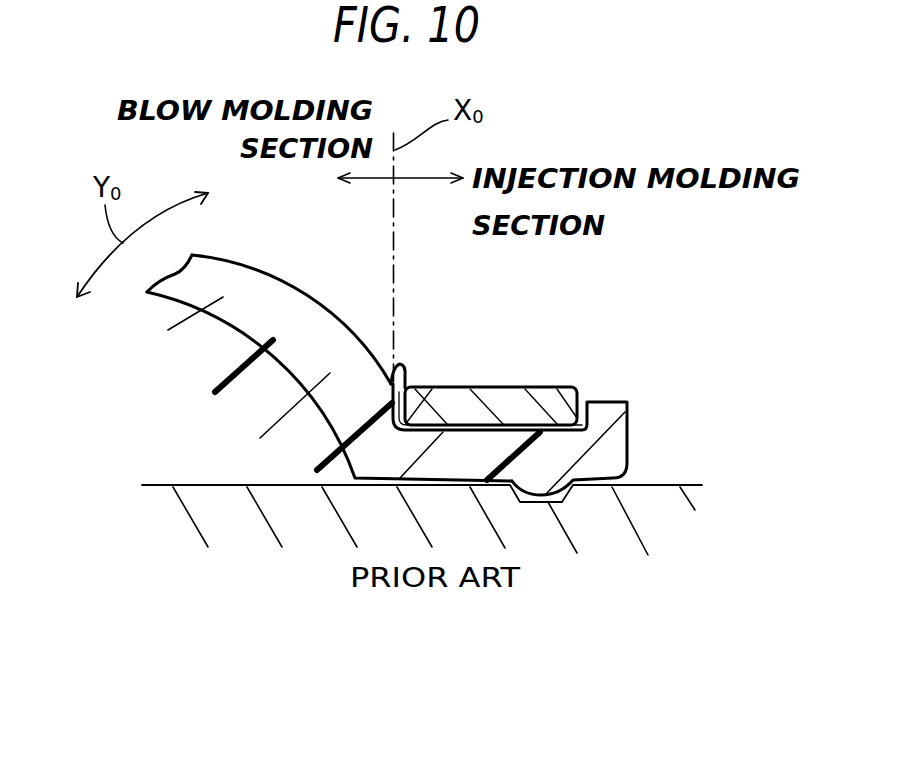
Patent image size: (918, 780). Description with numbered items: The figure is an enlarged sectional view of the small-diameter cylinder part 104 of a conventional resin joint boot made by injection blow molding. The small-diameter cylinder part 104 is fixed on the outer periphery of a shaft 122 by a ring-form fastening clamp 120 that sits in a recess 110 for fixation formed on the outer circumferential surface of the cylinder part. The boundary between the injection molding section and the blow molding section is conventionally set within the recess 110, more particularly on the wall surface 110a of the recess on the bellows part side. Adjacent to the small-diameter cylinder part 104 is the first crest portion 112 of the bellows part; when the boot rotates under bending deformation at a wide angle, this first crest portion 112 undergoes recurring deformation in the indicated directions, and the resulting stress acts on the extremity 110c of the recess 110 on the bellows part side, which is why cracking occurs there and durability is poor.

The small-diameter cylinder part 104 is at (640, 392).
The recess for fixation 110 is at (557, 390).
The wall surface 110a is at (392, 372).
The extremity 110c is at (428, 387).
The first crest portion 112 is at (178, 324).
The ring-form fastening clamp 120 is at (503, 387).
The shaft 122 is at (673, 485).